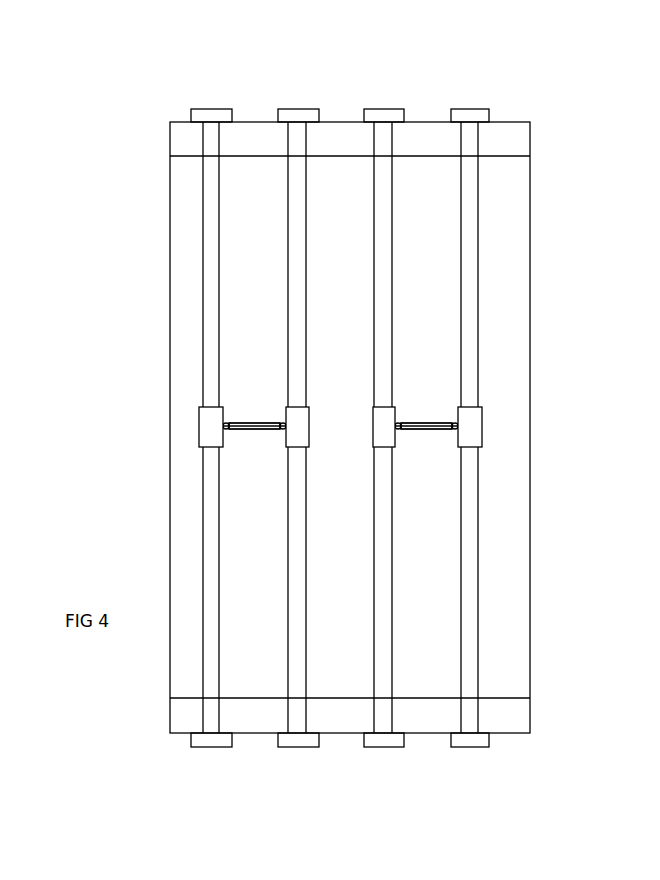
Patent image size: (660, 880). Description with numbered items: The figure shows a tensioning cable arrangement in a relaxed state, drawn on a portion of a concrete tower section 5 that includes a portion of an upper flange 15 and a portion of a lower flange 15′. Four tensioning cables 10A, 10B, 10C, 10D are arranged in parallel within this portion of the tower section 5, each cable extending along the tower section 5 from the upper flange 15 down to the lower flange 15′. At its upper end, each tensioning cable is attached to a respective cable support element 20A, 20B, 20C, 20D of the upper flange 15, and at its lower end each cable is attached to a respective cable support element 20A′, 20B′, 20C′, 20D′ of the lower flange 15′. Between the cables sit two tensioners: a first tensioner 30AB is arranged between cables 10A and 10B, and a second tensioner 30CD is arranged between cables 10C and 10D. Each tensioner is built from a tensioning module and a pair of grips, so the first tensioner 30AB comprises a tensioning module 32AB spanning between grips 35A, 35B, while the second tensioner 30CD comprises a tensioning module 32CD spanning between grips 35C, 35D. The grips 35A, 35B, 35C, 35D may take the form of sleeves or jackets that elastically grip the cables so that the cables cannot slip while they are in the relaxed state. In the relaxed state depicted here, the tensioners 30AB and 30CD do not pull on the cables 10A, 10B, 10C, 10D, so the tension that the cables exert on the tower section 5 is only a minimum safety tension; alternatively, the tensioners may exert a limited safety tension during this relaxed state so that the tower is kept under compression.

The concrete tower section 5 is at (170, 427).
The upper flange 15 is at (182, 122).
The lower flange 15′ is at (178, 735).
The tensioning cable 10A is at (203, 272).
The tensioning cable 10B is at (288, 277).
The tensioning cable 10C is at (373, 270).
The tensioning cable 10D is at (460, 270).
The cable support element 20A is at (217, 109).
The cable support element 20B is at (300, 109).
The cable support element 20C is at (388, 109).
The cable support element 20D is at (473, 109).
The cable support element 20A′ is at (208, 747).
The cable support element 20B′ is at (295, 747).
The cable support element 20C′ is at (382, 747).
The cable support element 20D′ is at (468, 747).
The first tensioner 30AB is at (258, 404).
The second tensioner 30CD is at (432, 404).
The tensioning module 32AB is at (248, 430).
The tensioning module 32CD is at (422, 430).
The grip 35A is at (197, 420).
The grip 35B is at (310, 430).
The grip 35C is at (373, 422).
The grip 35D is at (482, 430).